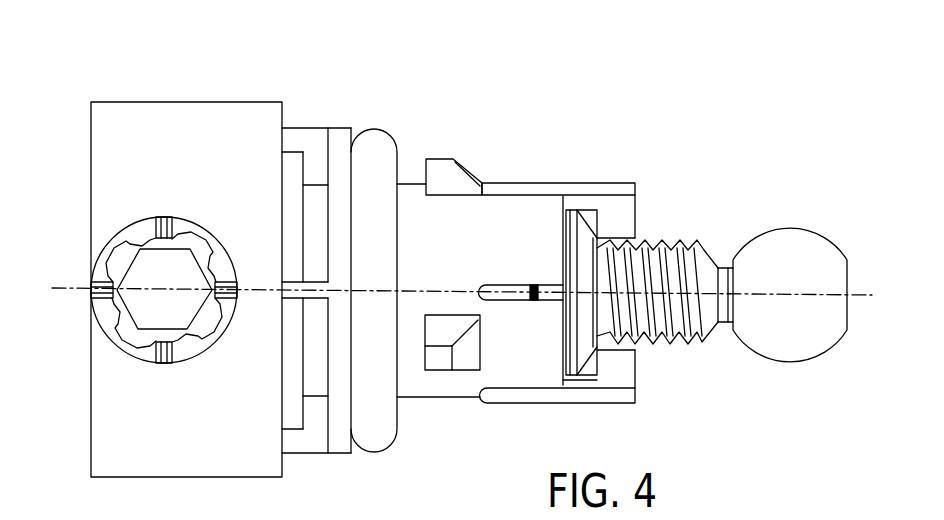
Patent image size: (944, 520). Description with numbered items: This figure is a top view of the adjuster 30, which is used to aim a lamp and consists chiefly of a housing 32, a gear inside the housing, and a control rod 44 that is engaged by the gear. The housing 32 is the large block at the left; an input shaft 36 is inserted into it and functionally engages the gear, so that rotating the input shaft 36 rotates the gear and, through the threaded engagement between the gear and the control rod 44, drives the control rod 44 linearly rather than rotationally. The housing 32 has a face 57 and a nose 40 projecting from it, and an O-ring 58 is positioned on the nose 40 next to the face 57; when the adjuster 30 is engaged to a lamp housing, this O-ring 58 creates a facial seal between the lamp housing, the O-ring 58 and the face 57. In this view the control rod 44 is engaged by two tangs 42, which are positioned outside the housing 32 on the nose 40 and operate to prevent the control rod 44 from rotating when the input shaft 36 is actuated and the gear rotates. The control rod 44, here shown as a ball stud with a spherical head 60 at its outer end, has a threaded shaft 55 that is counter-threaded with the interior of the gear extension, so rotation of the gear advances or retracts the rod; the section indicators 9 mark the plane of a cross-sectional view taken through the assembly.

The section line 9- 9 is at (52, 288).
The adjuster 30 is at (183, 245).
The housing 32 is at (217, 99).
The input shaft 36 is at (133, 302).
The nose 40 is at (430, 398).
The anti-rotational tang 42 is at (578, 183).
The control rod 44 is at (700, 350).
The shaft 55 is at (677, 242).
The face 57 is at (338, 128).
The O-ring 58 is at (383, 143).
The ball 60 is at (792, 237).